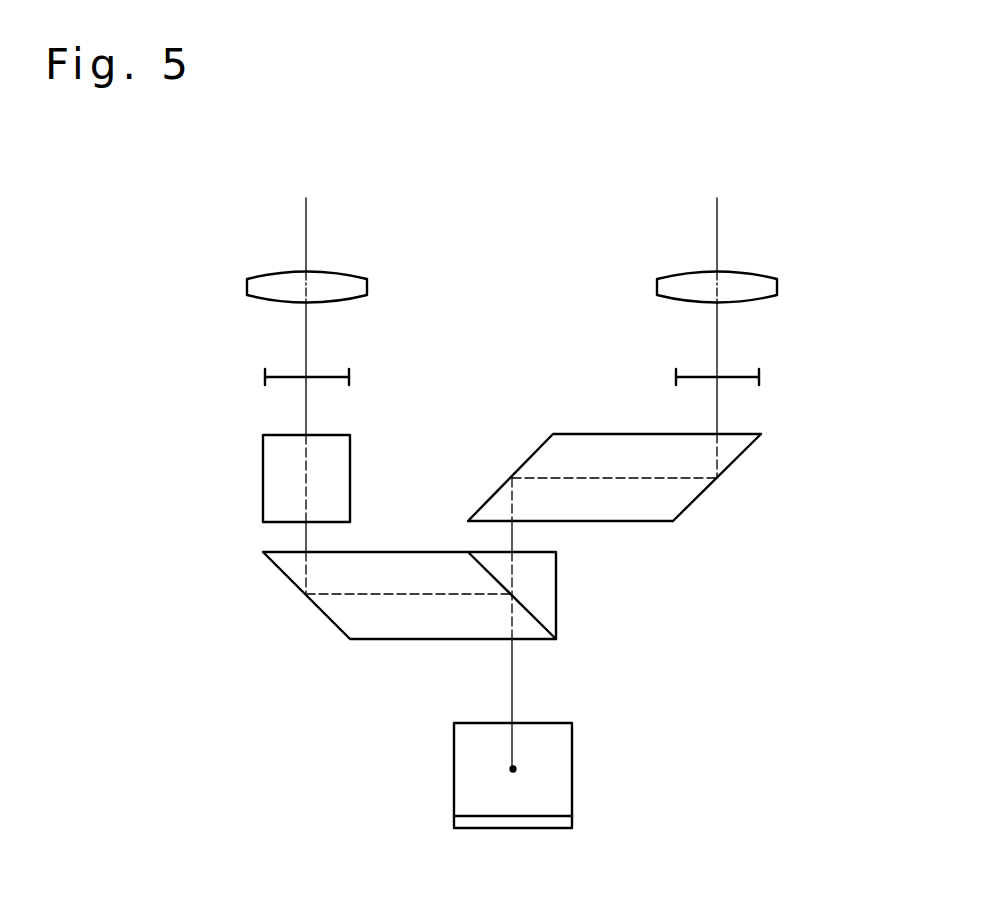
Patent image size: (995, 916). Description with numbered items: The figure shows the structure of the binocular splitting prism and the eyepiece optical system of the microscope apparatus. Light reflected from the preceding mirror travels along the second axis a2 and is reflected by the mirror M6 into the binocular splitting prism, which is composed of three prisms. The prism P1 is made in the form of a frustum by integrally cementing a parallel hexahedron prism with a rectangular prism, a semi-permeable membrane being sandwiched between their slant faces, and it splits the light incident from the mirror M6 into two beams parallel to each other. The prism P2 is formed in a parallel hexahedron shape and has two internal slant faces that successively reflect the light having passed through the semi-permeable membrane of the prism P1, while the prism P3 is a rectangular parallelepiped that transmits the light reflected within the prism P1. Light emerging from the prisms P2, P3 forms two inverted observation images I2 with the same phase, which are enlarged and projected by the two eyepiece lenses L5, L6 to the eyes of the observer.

The eyepiece lens L6 is at (247, 289).
The eyepiece lens L5 is at (777, 288).
The inverted observation image I2 is at (265, 376).
The prism P3 is at (263, 481).
The prism P2 is at (706, 488).
The prism P1 is at (322, 616).
The mirror M6 is at (572, 766).
The second axis a2 is at (516, 770).